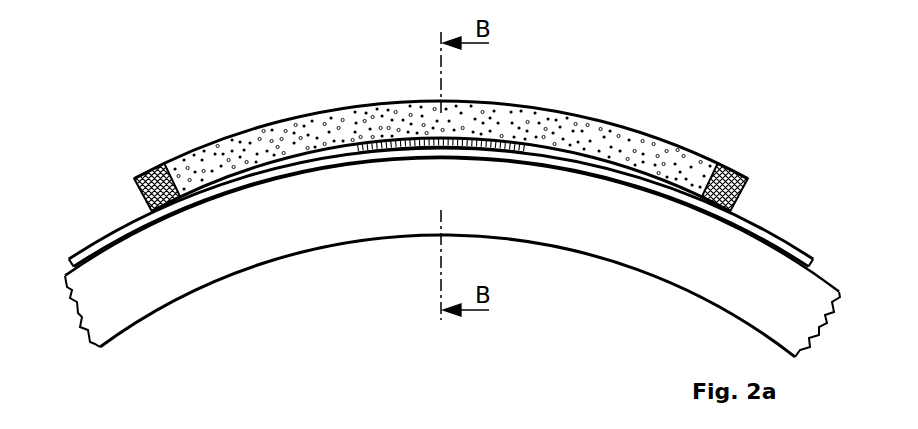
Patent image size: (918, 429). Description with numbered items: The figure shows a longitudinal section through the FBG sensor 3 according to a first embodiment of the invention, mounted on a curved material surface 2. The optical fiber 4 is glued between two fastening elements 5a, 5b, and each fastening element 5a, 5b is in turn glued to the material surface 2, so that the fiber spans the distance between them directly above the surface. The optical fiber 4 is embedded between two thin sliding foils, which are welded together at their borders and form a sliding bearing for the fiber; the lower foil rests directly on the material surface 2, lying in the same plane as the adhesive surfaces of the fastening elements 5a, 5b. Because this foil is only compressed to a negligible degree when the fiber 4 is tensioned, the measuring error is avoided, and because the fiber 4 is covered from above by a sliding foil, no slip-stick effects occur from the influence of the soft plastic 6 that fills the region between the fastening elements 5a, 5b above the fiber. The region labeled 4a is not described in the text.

The material surface 2 is at (65, 273).
The FBG sensor 3 is at (271, 108).
The optical fiber 4 is at (95, 244).
The sensing region of carrier layer 4a is at (395, 143).
The fastening element 5a is at (160, 166).
The fastening element 5b is at (745, 173).
The soft plastic 6 is at (583, 127).